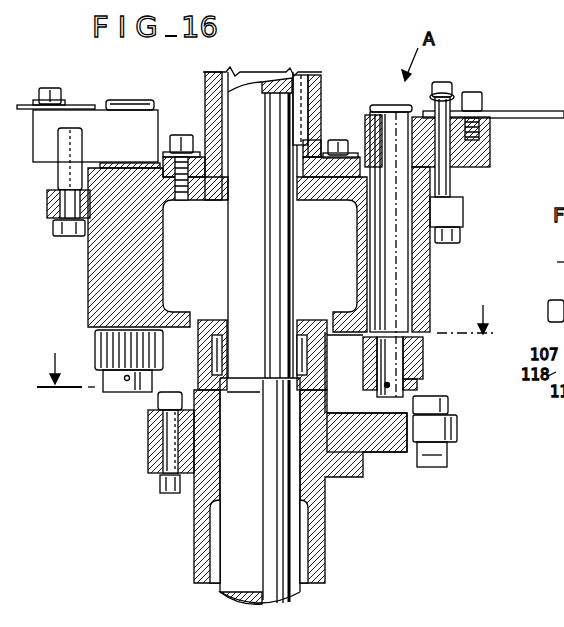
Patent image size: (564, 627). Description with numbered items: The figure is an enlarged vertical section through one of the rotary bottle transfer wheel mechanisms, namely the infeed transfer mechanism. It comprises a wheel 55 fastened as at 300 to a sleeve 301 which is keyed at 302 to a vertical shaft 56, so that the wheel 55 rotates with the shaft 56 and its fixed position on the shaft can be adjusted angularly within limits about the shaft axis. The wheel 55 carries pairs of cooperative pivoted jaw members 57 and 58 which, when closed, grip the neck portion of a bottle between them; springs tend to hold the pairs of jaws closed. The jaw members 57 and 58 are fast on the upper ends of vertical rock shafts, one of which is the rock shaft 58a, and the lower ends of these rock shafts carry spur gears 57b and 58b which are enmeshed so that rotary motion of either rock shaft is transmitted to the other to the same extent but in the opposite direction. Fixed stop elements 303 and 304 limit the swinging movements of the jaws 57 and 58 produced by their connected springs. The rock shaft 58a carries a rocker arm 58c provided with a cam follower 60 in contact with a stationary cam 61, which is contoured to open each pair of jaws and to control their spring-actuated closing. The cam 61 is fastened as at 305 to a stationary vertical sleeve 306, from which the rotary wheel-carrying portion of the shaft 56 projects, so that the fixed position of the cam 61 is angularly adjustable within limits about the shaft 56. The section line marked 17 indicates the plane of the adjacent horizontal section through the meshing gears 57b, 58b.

The jaw member 57 is at (79, 104).
The fastening 300 is at (181, 138).
The vertical shaft 56 is at (254, 97).
The key 302 is at (300, 80).
The sleeve 301 is at (321, 82).
The jaw member 58 is at (523, 112).
The fixed stop element 303 is at (62, 178).
The fixed stop element 304 is at (447, 188).
The wheel 55 is at (333, 195).
The rock shaft 58a is at (400, 262).
The spur gear 57b is at (104, 342).
The spur gear 58b is at (423, 362).
The rocker arm 58c is at (431, 398).
The cam follower 60 is at (460, 432).
The stationary cam 61 is at (403, 453).
The fastening 305 is at (160, 436).
The stationary vertical sleeve 306 is at (314, 539).
The section line 17 is at (266, 357).